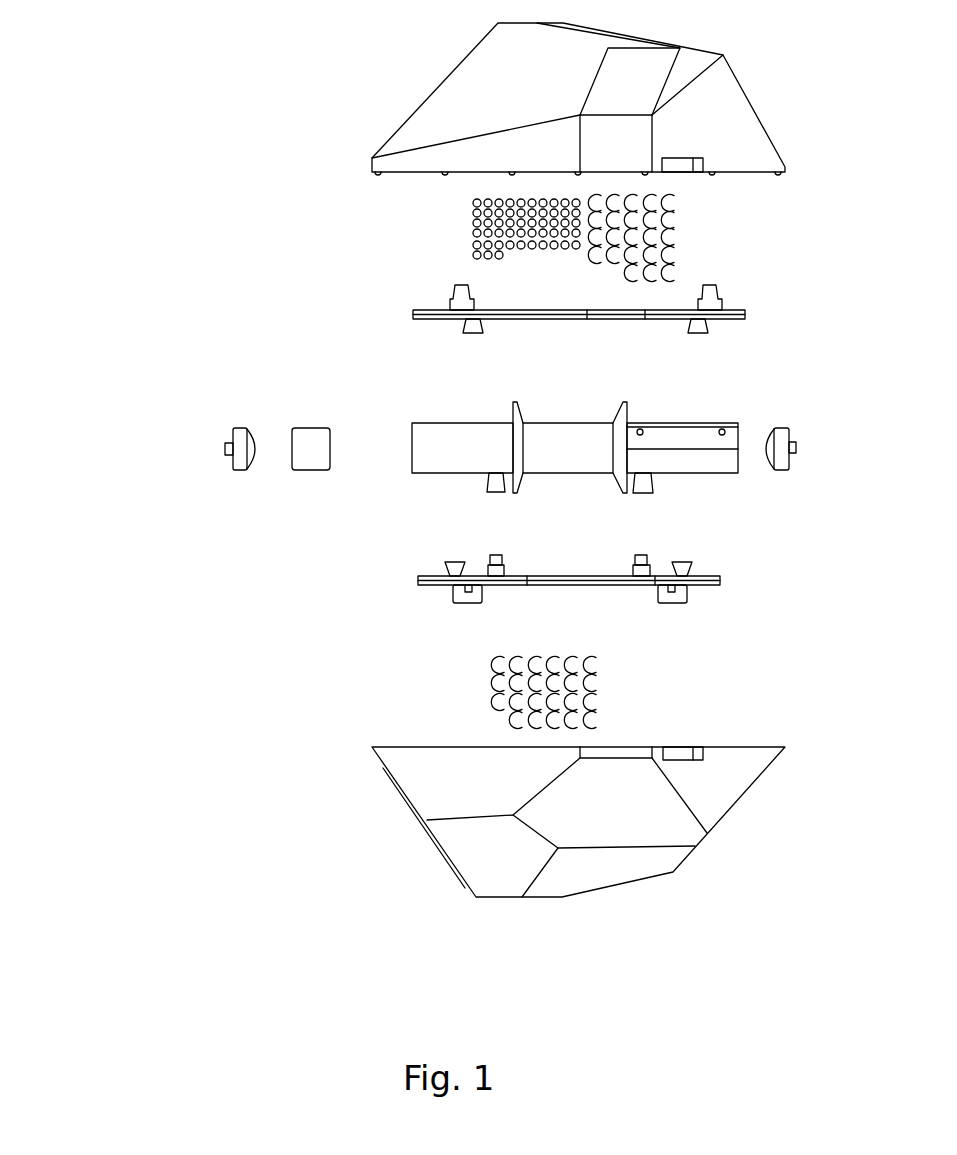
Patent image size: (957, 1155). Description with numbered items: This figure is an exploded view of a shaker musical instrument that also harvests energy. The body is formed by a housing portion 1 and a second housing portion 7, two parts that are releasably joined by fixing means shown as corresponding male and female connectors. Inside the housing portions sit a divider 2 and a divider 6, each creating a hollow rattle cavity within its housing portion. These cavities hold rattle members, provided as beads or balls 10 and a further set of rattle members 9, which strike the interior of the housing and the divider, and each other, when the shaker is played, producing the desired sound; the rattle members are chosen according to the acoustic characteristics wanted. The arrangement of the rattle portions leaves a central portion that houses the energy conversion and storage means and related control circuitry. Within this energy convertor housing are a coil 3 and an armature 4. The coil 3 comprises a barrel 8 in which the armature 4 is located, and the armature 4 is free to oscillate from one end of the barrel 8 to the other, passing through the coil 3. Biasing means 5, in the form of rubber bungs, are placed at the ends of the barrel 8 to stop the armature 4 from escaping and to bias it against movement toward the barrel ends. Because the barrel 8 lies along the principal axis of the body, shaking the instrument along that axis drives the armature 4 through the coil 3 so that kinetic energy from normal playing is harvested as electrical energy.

The housing portion 1 is at (360, 139).
The divider 2 is at (407, 317).
The coil 3 is at (575, 412).
The armature 4 is at (297, 405).
The biasing means 5 is at (225, 420).
The divider 6 is at (412, 583).
The housing portion 7 is at (365, 793).
The barrel 8 is at (438, 412).
The fasteners 9 is at (722, 248).
The beads or balls 10 is at (475, 682).